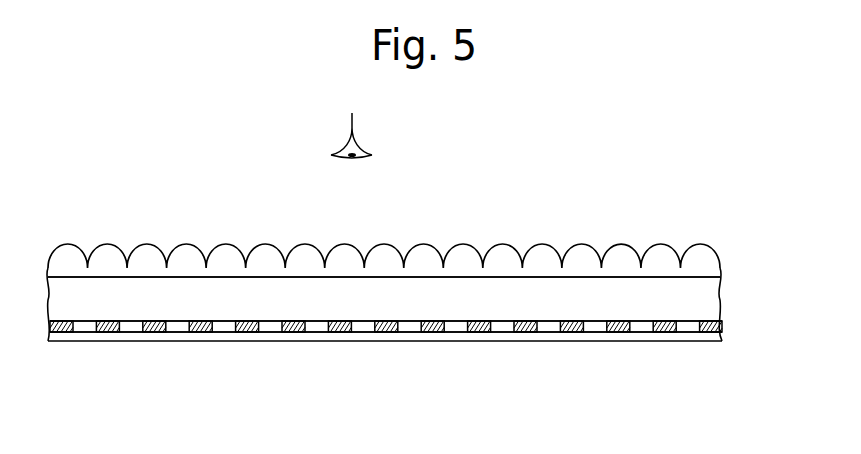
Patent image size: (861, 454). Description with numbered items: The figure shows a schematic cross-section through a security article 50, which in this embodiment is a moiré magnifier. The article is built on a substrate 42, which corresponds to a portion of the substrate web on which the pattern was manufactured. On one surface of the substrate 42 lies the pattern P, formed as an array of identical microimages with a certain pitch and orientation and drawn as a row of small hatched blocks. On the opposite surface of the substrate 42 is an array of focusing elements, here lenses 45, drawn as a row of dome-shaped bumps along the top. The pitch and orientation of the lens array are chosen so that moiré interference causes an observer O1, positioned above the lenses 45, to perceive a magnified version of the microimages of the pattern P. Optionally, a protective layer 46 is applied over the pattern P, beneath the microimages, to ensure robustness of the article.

The security article 50 is at (617, 163).
The lenses 45 is at (698, 255).
The substrate 42 is at (697, 293).
The protective layer 46 is at (655, 334).
The pattern P is at (732, 328).
The observer O1 is at (361, 135).